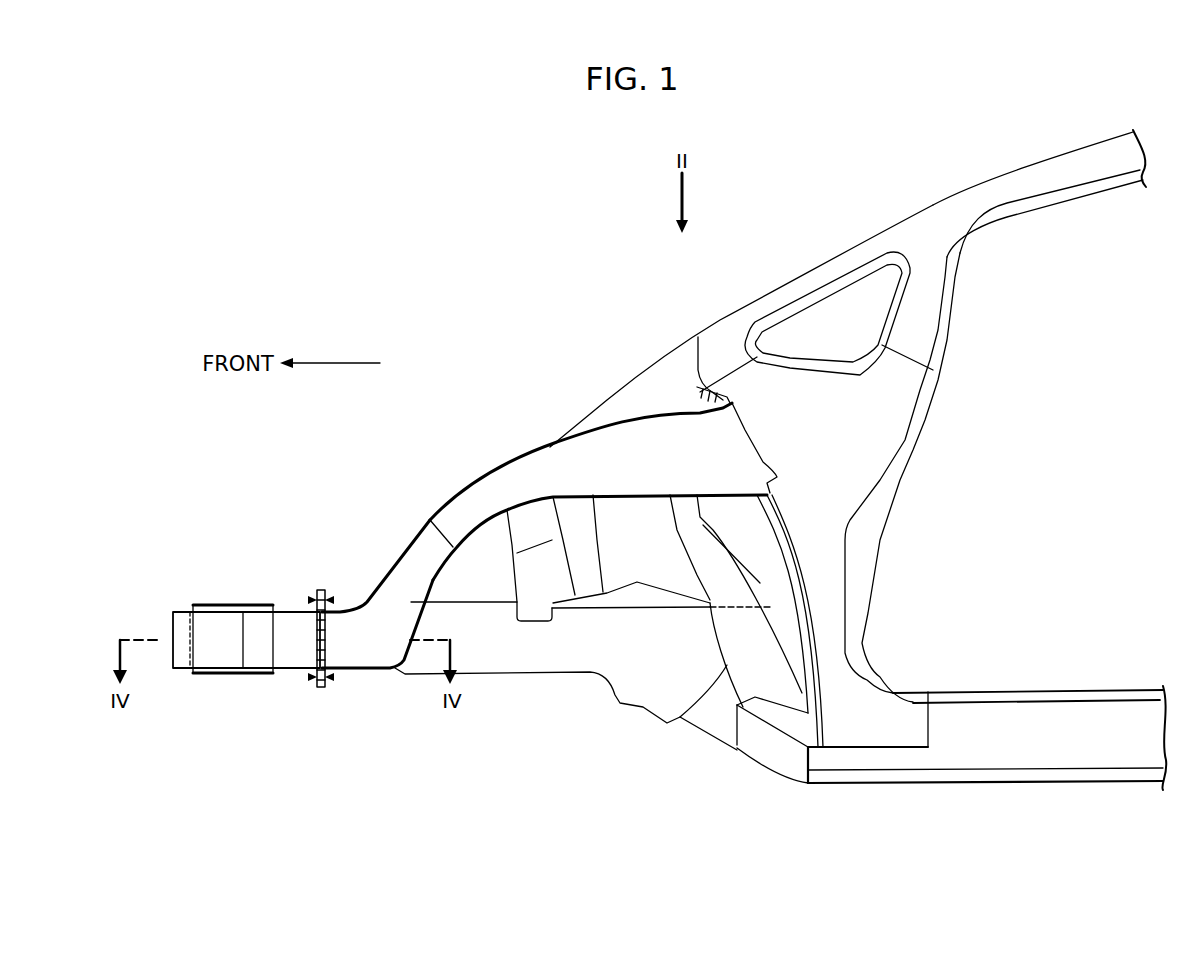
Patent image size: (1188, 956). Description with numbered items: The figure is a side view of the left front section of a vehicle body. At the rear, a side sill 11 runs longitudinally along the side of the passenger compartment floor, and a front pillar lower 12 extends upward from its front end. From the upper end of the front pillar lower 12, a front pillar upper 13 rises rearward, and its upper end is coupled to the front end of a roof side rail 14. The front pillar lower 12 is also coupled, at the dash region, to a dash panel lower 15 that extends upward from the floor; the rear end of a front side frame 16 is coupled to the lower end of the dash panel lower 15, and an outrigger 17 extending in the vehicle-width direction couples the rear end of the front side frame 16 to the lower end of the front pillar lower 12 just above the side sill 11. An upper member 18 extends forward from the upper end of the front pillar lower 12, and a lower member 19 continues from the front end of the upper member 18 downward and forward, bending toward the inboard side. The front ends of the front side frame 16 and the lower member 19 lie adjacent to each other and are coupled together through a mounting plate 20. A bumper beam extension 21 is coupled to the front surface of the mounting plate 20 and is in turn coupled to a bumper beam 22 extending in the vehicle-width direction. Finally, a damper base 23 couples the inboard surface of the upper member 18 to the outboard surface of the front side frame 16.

The side sill 11 is at (1067, 743).
The front pillar lower 12 is at (827, 560).
The front pillar upper 13 is at (795, 283).
The roof side rail 14 is at (1047, 175).
The dash panel lower 15 is at (802, 690).
The front side frame 16 is at (542, 660).
The outrigger 17 is at (765, 755).
The upper member 18 is at (593, 450).
The lower member 19 is at (390, 603).
The mounting plate 20 is at (328, 652).
The bumper beam extension 21 is at (293, 655).
The bumper beam 22 is at (177, 628).
The damper base 23 is at (643, 573).